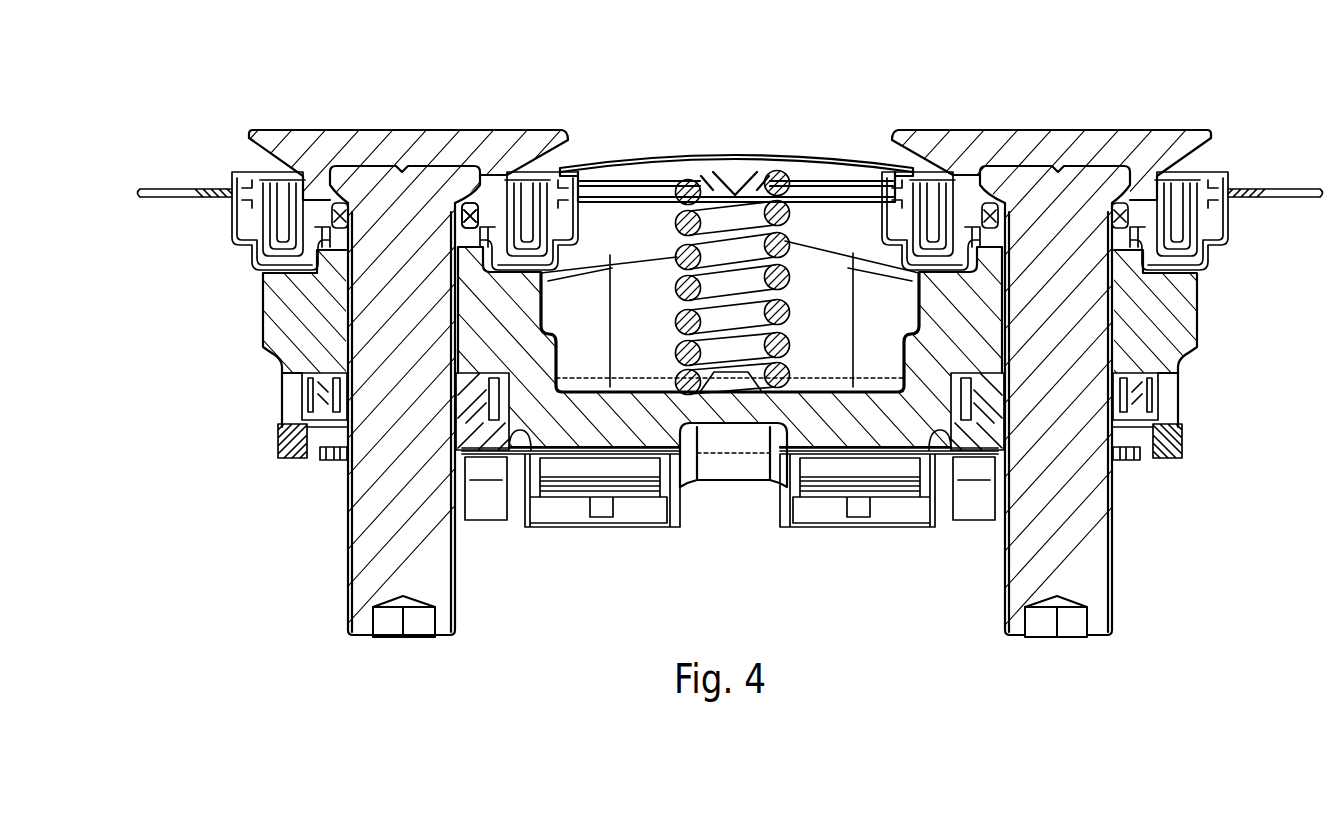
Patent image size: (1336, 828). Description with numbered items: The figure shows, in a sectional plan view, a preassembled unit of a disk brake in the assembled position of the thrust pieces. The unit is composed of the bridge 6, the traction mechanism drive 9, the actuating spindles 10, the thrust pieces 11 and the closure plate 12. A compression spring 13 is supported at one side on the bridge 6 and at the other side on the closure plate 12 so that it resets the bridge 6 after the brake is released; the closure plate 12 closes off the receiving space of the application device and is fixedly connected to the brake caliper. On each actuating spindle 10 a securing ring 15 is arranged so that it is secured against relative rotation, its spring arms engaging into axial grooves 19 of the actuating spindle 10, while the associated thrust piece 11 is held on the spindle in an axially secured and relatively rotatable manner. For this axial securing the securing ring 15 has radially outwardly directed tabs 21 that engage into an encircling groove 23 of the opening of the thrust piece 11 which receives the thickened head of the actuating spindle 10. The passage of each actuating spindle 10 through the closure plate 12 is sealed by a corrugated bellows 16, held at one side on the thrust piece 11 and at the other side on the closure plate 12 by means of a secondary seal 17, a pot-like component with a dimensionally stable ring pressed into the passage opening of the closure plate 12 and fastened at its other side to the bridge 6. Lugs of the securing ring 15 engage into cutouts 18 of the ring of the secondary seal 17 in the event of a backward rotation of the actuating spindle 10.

The bridge 6 is at (1152, 320).
The traction mechanism drive 9 is at (277, 448).
The actuating spindle 10 is at (382, 405).
The thrust piece 11 is at (310, 150).
The closure plate 12 is at (630, 187).
The compression spring 13 is at (745, 248).
The securing ring 15 is at (343, 228).
The bellows 16 is at (243, 213).
The secondary seal 17 is at (347, 240).
The cutouts 18 is at (315, 352).
The axial grooves 19 is at (350, 575).
The tabs 21 is at (478, 205).
The encircling groove 23 is at (470, 215).